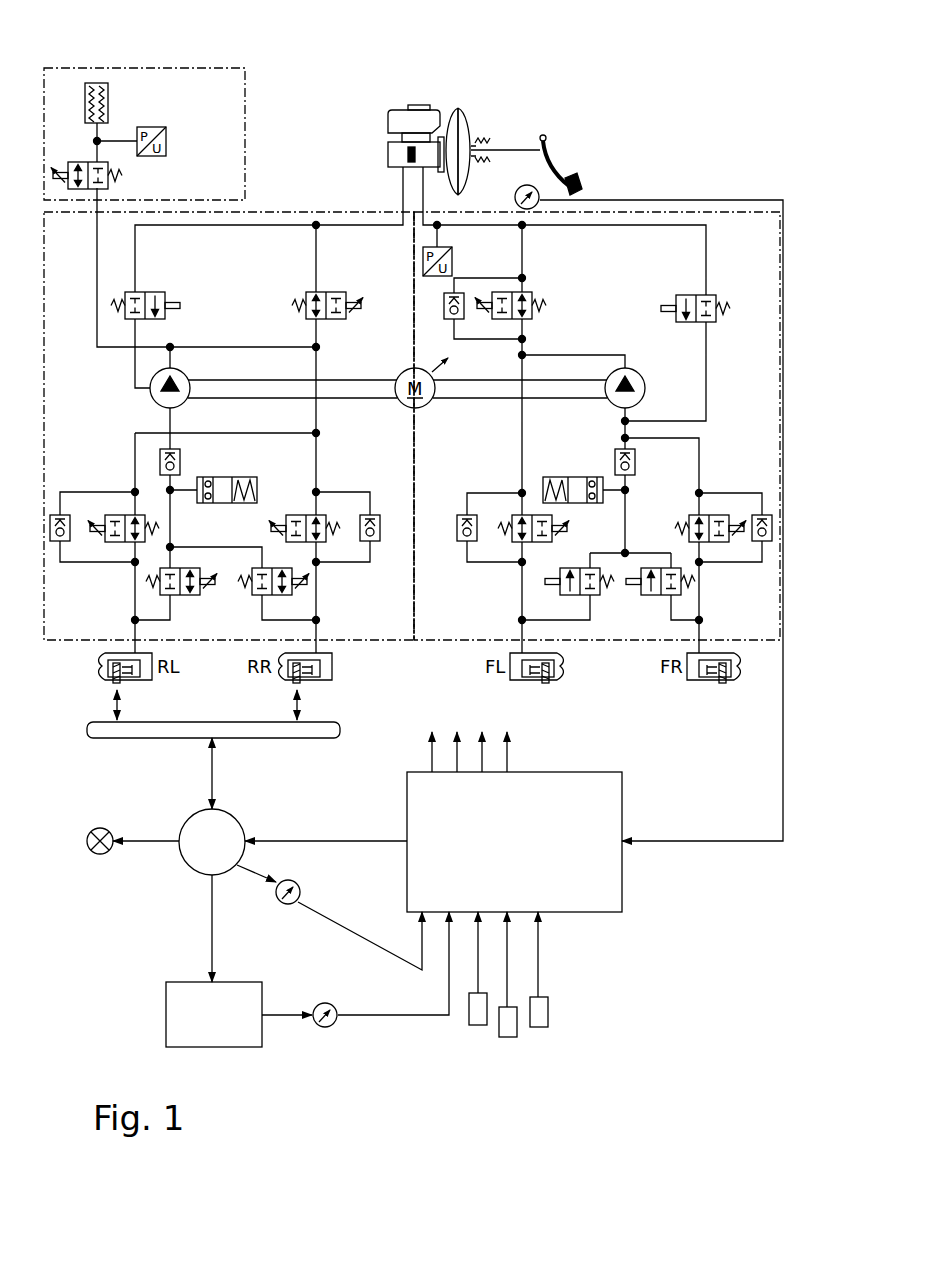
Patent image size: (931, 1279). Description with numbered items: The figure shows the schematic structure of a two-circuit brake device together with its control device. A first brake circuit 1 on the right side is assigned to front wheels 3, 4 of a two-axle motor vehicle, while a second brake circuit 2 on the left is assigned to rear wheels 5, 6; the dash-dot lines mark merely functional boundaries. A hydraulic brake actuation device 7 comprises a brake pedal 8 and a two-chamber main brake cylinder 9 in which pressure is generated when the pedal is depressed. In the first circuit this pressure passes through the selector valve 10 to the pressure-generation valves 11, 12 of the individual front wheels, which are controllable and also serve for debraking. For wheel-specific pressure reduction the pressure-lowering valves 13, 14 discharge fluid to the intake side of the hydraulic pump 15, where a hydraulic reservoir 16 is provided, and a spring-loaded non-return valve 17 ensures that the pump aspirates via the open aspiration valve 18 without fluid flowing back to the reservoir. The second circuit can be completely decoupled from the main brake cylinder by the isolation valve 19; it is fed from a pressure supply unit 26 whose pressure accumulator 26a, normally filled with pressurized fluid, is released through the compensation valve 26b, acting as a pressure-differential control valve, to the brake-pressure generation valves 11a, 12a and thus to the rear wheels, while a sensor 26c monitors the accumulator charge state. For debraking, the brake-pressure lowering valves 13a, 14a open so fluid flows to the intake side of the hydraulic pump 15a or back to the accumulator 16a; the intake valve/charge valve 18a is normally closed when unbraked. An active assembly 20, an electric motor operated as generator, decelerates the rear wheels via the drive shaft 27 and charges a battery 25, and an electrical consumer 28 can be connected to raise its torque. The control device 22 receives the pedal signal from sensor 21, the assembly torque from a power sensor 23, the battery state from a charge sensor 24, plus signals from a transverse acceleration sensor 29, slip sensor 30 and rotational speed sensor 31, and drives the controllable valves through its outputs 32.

The first brake circuit 1 is at (607, 640).
The second brake circuit 2 is at (198, 640).
The front wheel 3 is at (720, 680).
The front wheel 4 is at (543, 680).
The rear wheel 5 is at (293, 678).
The rear wheel 6 is at (113, 678).
The hydraulic brake actuation device 7 is at (492, 118).
The brake pedal 8 is at (566, 175).
The main brake cylinder 9 is at (388, 155).
The selector valve 10 is at (536, 300).
The pressure-generation valve 11 is at (497, 487).
The brake-pressure generation valve 11a is at (88, 487).
The pressure-generation valve 12 is at (738, 487).
The brake-pressure generation valve 12a is at (352, 487).
The pressure-lowering valve 13 is at (575, 568).
The brake-pressure lowering valve 13a is at (182, 595).
The pressure-lowering valve 14 is at (650, 596).
The brake-pressure lowering valve 14a is at (288, 598).
The hydraulic pump 15 is at (642, 380).
The hydraulic pump 15a is at (189, 378).
The hydraulic reservoir 16 is at (553, 477).
The accumulator 16a is at (257, 480).
The spring-loaded non-return valve 17 is at (636, 462).
The aspiration valve 18 is at (690, 295).
The intake valve/charge valve 18a is at (150, 292).
The isolation valve 19 is at (335, 319).
The active assembly 20 is at (238, 818).
The sensor 21 is at (515, 197).
The control device 22 is at (590, 912).
The power sensor 23 is at (300, 886).
The charge sensor 24 is at (325, 1002).
The battery 25 is at (166, 1015).
The pressure supply unit 26 is at (247, 86).
The pressure accumulator 26a is at (108, 105).
The compensation valve 26b is at (80, 162).
The sensor 26c is at (166, 140).
The drive shaft 27 is at (162, 740).
The electrical consumer 28 is at (100, 855).
The transverse acceleration sensor 29 is at (478, 1027).
The slip sensor 30 is at (507, 1037).
The rotational speed sensor 31 is at (540, 1027).
The outputs 32 is at (517, 753).